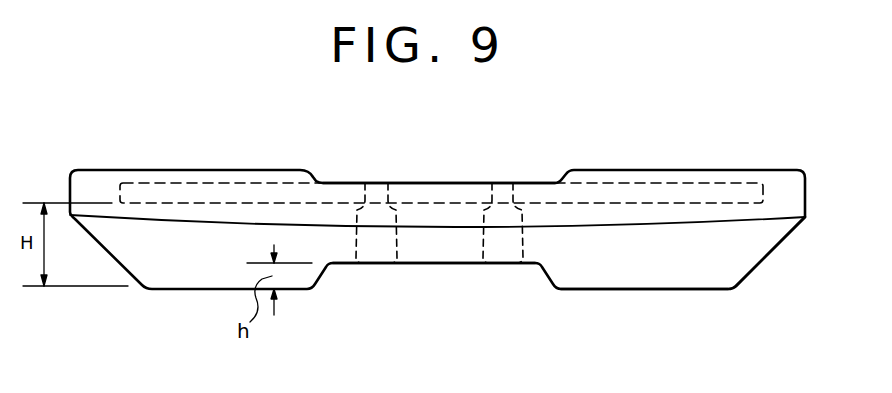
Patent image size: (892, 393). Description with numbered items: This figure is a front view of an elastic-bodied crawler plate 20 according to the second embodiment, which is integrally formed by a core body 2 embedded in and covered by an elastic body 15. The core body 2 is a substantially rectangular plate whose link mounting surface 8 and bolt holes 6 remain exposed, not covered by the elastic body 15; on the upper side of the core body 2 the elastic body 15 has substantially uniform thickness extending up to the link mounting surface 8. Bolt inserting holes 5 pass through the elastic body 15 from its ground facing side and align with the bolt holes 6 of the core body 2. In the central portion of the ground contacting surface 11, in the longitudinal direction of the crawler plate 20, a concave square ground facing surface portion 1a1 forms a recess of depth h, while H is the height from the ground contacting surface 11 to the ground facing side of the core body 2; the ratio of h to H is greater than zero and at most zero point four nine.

The elastic-bodied crawler plate 20 is at (778, 168).
The link mounting surface 8 is at (442, 183).
The elastic body 15 is at (752, 243).
The core body 2 is at (642, 195).
The bolt holes 6 is at (502, 197).
The bolt inserting holes 5 is at (507, 258).
The concave square ground facing surface portion 1a1 is at (438, 265).
The ground contacting surface 11 is at (660, 292).